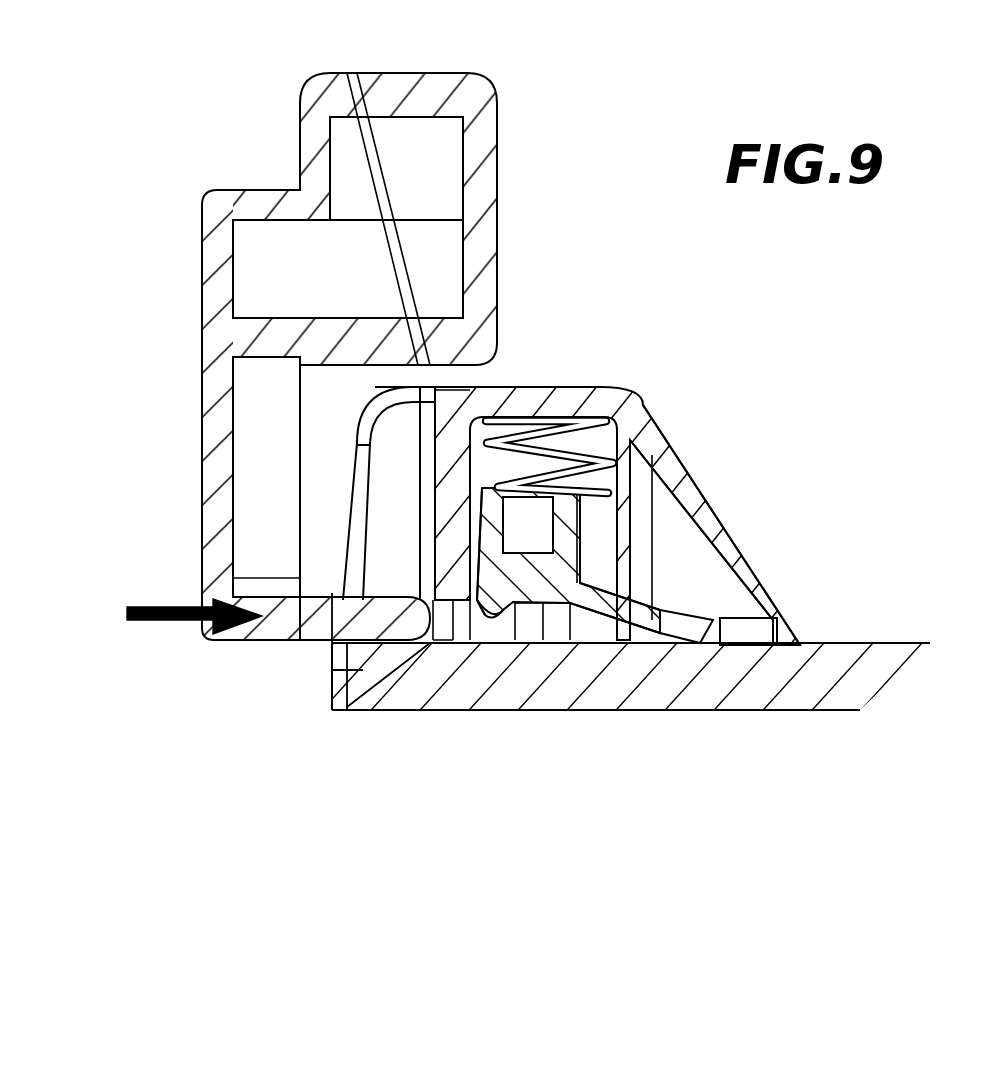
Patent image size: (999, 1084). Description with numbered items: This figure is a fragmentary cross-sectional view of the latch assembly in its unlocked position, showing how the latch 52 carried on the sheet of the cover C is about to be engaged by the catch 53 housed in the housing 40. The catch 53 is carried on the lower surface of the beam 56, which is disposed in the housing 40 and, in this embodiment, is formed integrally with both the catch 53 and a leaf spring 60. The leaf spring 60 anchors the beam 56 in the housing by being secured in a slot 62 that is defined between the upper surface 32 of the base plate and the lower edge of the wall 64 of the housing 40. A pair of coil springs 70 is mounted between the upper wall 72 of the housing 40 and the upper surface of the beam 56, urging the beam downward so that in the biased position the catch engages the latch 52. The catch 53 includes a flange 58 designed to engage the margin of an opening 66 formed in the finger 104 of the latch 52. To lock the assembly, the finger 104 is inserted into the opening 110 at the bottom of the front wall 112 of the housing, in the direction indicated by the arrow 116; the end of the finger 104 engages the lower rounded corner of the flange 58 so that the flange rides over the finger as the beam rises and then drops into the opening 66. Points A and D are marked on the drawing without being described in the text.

The upper surface of the base plate 32 is at (857, 640).
The housing 40 is at (650, 392).
The latch 52 is at (222, 410).
The catch 53 is at (587, 597).
The beam 56 is at (567, 500).
The flange 58 is at (500, 607).
The leaf spring 60 is at (683, 620).
The slot 62 is at (757, 640).
The wall of the housing 64 is at (705, 502).
The opening 66 is at (330, 617).
The coil springs 70 is at (570, 427).
The upper wall of the housing 72 is at (535, 377).
The finger 104 is at (277, 627).
The opening 110 is at (427, 590).
The front wall of the housing 112 is at (437, 467).
The arrow 116 is at (145, 622).
The point A is at (520, 597).
The cover C is at (770, 592).
The point D is at (477, 617).